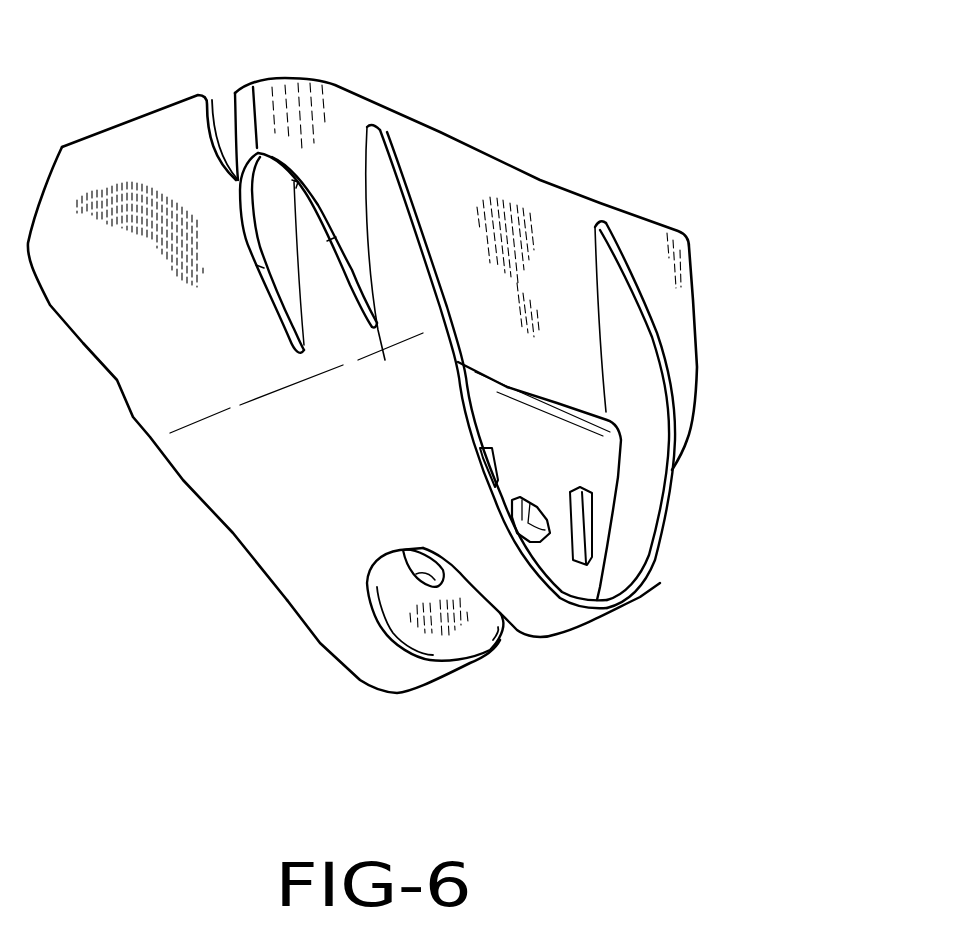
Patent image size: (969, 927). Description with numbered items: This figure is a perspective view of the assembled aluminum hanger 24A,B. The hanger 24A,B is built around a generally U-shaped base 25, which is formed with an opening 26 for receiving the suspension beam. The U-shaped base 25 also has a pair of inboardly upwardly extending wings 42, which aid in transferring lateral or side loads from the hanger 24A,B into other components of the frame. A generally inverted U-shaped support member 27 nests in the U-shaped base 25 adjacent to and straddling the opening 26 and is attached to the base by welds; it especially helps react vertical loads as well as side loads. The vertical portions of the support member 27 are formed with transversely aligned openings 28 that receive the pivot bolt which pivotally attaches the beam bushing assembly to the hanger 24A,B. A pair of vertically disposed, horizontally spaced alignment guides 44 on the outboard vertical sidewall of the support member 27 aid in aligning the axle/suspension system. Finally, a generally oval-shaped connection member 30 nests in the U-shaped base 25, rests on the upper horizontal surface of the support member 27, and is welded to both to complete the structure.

The wings 42 is at (110, 163).
The connection member 30 is at (545, 202).
The U-shaped base 25 is at (288, 600).
The hanger 24A,B is at (675, 481).
The support member 27 is at (559, 468).
The opening 26 is at (477, 657).
The openings 28 is at (403, 550).
The alignment guides 44 is at (485, 456).